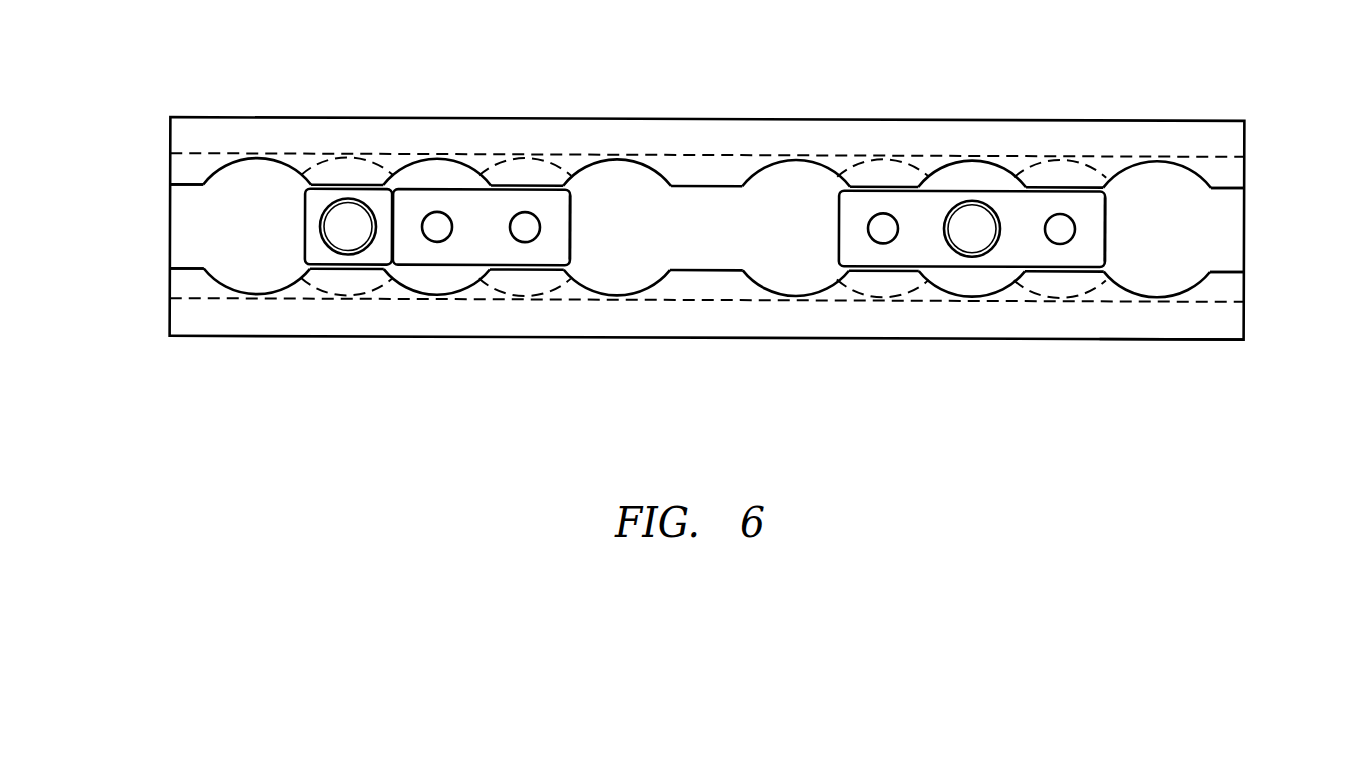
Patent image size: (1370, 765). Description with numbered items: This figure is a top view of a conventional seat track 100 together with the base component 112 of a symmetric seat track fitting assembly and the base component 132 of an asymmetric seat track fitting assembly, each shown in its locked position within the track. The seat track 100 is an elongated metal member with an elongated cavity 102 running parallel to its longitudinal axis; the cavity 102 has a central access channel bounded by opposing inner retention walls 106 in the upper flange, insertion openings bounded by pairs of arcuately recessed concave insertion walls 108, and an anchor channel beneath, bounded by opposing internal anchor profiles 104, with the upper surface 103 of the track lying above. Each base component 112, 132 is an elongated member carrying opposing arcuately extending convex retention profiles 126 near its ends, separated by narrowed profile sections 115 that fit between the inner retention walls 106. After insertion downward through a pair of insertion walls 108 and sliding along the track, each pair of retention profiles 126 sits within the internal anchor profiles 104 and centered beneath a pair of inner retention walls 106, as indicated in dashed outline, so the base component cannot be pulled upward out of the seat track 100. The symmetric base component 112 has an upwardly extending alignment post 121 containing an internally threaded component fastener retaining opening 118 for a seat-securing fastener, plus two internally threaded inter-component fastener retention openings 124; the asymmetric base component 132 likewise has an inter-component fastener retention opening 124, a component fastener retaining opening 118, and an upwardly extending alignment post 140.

The seat track 100 is at (1245, 132).
The elongated cavity 102 is at (177, 232).
The upper surface 103 is at (1228, 318).
The internal anchor profiles 104 is at (187, 154).
The inner retention walls 106 is at (177, 187).
The arcuately recessed concave insertion walls 108 is at (258, 160).
The base component 112 is at (1107, 228).
The narrowed profile sections 115 is at (453, 187).
The component fastener retaining opening 118 is at (348, 224).
The upwardly extending alignment post 121 is at (972, 245).
The inter-component fastener retention openings 124 is at (541, 186).
The arcuately extending convex retention profiles 126 is at (330, 157).
The base component 132 is at (575, 205).
The upwardly extending alignment post 140 is at (434, 216).